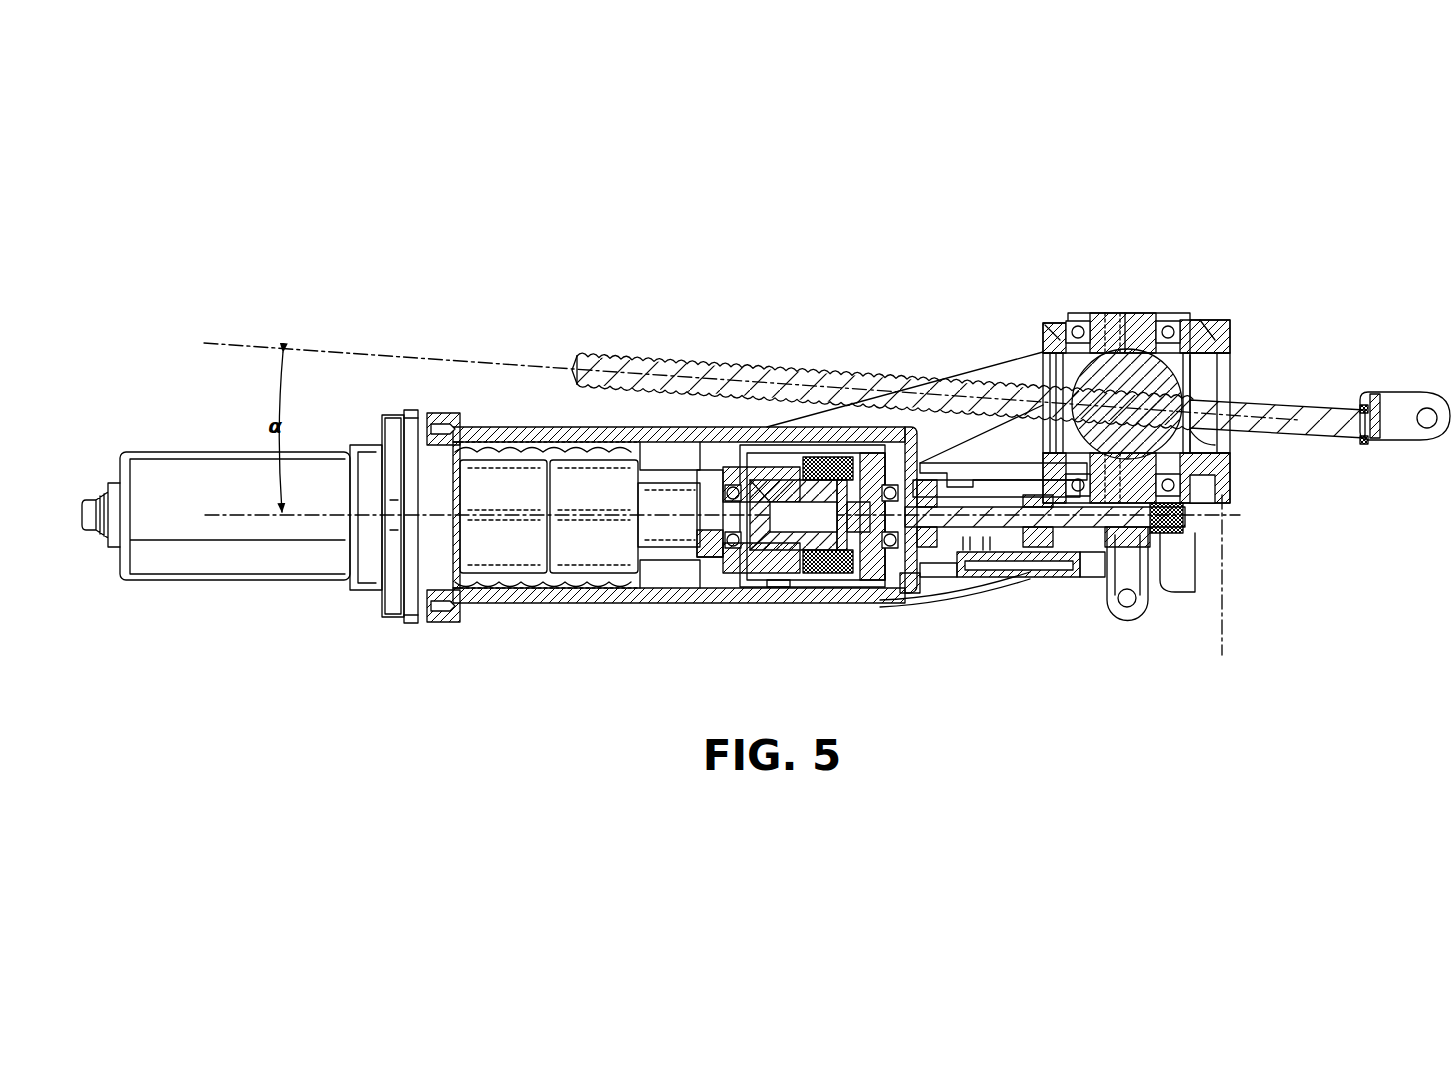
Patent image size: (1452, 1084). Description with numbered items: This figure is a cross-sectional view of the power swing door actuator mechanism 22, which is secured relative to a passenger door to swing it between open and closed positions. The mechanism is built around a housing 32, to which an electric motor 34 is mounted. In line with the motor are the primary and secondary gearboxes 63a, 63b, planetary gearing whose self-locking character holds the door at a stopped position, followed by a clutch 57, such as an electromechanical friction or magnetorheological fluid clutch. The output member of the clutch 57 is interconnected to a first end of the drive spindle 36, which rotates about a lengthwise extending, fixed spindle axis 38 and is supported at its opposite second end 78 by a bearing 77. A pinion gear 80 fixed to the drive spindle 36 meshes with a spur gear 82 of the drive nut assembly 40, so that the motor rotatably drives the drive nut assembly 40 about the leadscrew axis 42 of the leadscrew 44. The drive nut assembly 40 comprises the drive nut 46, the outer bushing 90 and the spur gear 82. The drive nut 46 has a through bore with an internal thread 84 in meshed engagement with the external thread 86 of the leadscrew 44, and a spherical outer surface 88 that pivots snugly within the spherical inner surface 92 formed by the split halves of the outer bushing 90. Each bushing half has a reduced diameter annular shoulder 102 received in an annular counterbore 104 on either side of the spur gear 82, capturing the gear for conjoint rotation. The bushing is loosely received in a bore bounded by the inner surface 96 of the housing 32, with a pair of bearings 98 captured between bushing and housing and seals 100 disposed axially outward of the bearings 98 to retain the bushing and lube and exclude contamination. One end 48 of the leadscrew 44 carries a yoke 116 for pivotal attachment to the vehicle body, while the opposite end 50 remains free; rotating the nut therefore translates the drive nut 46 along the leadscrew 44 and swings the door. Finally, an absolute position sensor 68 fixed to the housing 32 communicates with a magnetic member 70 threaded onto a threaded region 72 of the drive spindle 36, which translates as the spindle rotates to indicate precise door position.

The power door actuator mechanism 22 is at (1237, 243).
The housing 32 is at (552, 608).
The electric motor 34 is at (203, 452).
The drive spindle 36 is at (1023, 578).
The spindle axis 38 is at (1230, 584).
The drive nut assembly 40 is at (998, 350).
The leadscrew axis 42 is at (333, 350).
The leadscrew 44 is at (648, 356).
The drive nut 46 is at (1233, 385).
The end of the leadscrew 48 is at (1380, 405).
The opposite end of the leadscrew 50 is at (577, 370).
The clutch 57 is at (784, 596).
The primary gearbox 63a is at (512, 578).
The secondary gearbox 63b is at (583, 578).
The absolute position sensor 68 is at (1040, 583).
The magnetic member 70 is at (1088, 577).
The threaded region 72 is at (962, 596).
The bearing 77 is at (1160, 555).
The second end 78 is at (1190, 540).
The pinion gear 80 is at (1127, 607).
The spur gear 82 is at (1121, 313).
The internal thread 84 is at (1230, 443).
The external thread 86 is at (772, 362).
The spherical outer surface 88 is at (1050, 345).
The outer bushing 90 is at (1172, 313).
The spherical inner surface 92 is at (1070, 307).
The inner surface 96 is at (1140, 313).
The bearings 98 is at (1073, 313).
The seals 100 is at (1050, 330).
The annular shoulder 102 is at (1100, 313).
The annular counterbore 104 is at (1060, 465).
The yoke 116 is at (1397, 392).